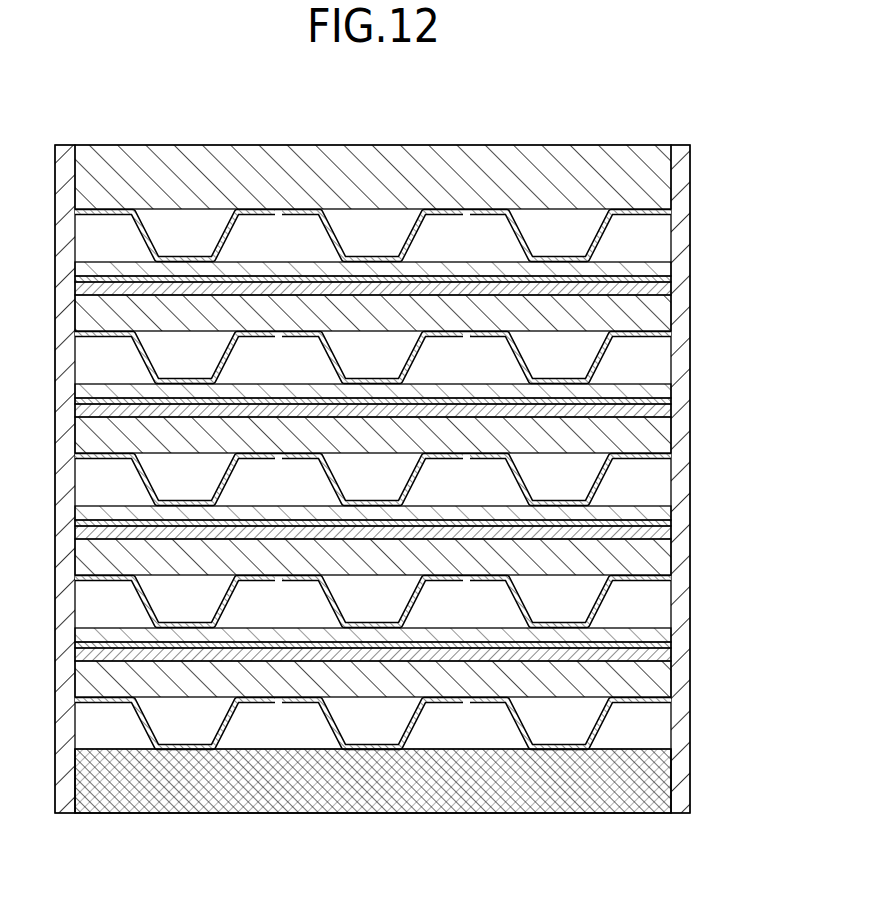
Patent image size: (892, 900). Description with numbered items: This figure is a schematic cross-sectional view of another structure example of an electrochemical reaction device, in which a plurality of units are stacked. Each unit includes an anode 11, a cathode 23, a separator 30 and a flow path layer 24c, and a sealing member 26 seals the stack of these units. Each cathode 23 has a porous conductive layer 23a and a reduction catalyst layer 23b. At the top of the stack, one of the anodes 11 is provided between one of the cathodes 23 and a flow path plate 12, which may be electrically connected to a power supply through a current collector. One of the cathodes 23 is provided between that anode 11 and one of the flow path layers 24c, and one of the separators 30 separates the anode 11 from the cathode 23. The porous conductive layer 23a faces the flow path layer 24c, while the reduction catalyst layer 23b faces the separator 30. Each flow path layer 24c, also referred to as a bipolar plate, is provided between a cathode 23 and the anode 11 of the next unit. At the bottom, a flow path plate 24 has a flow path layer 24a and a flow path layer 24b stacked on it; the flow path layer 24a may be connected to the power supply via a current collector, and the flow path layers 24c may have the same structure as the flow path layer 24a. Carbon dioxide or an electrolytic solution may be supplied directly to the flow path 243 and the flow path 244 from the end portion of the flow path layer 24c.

The sealing member 26 is at (688, 147).
The flow path plate 12 is at (658, 186).
The anode 11 is at (672, 267).
The separator 30 is at (672, 279).
The reduction catalyst layer 23b is at (672, 288).
The porous conductive layer 23a is at (672, 313).
The cathode 23 is at (774, 275).
The flow path layer 24c is at (672, 213).
The flow path layer 24b is at (672, 699).
The flow path layer 24a is at (672, 781).
The flow path plate 24 is at (774, 690).
The flow path 243 is at (188, 722).
The flow path 244 is at (468, 722).